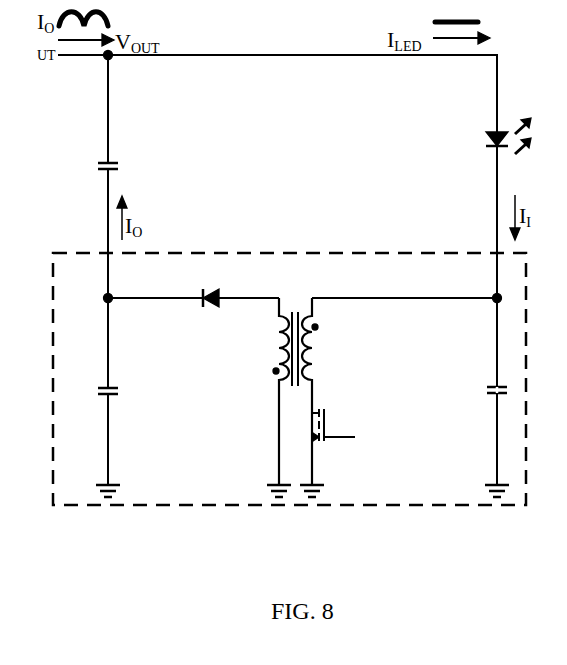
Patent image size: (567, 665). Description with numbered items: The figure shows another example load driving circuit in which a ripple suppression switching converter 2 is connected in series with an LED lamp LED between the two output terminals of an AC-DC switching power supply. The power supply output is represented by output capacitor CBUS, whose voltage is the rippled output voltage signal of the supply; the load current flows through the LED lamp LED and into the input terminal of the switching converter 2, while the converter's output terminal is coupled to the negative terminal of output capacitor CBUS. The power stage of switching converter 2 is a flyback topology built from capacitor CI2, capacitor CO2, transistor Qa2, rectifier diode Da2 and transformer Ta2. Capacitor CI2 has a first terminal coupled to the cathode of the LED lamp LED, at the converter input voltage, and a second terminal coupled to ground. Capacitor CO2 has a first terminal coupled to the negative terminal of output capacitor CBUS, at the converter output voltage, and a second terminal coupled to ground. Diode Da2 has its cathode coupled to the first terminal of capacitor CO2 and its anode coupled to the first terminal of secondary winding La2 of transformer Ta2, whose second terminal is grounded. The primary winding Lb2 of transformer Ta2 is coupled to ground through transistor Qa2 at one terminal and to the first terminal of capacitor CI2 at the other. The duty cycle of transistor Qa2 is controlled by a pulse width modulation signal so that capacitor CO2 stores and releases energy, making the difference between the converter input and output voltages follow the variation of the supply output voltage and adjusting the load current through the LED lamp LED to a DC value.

The switching converter 2 is at (315, 252).
The output capacitor CBUS is at (81, 170).
The LED lamp LED is at (480, 138).
The rectifier diode Da2 is at (208, 284).
The transformer Ta2 is at (370, 380).
The secondary winding La2 is at (266, 391).
The primary winding Lb2 is at (399, 391).
The transistor Qa2 is at (335, 419).
The capacitor CO2 is at (90, 400).
The capacitor CI2 is at (479, 398).